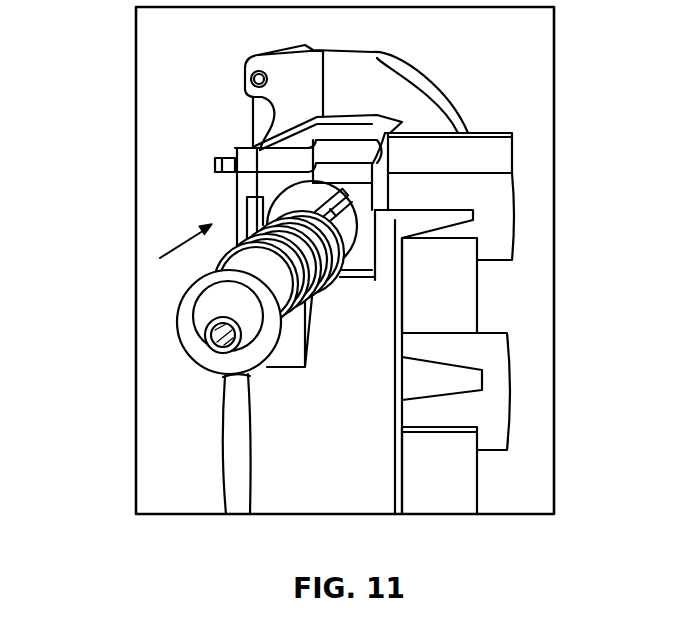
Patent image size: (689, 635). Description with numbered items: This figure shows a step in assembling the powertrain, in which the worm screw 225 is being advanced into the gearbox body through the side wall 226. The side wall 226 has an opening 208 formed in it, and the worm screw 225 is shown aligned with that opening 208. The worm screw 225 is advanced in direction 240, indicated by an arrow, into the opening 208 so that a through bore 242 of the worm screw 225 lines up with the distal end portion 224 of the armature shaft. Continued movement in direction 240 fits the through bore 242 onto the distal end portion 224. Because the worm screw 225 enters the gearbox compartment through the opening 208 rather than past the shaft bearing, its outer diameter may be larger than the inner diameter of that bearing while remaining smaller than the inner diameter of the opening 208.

The opening 208 is at (352, 205).
The distal end portion 224 is at (327, 218).
The worm screw 225 is at (197, 307).
The side wall 226 is at (273, 185).
The direction 240 is at (160, 245).
The through bore 242 is at (213, 343).